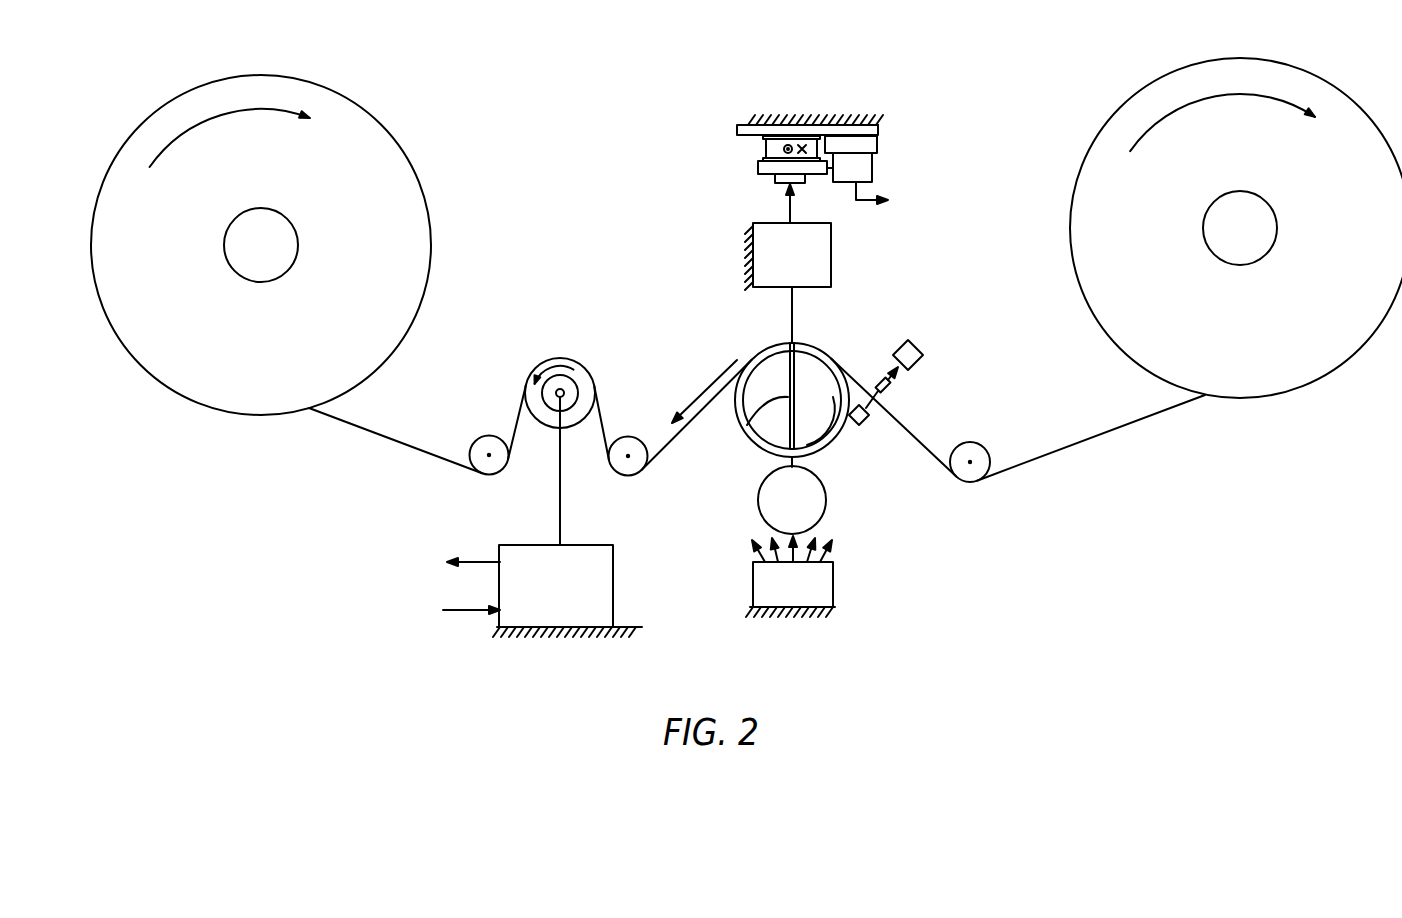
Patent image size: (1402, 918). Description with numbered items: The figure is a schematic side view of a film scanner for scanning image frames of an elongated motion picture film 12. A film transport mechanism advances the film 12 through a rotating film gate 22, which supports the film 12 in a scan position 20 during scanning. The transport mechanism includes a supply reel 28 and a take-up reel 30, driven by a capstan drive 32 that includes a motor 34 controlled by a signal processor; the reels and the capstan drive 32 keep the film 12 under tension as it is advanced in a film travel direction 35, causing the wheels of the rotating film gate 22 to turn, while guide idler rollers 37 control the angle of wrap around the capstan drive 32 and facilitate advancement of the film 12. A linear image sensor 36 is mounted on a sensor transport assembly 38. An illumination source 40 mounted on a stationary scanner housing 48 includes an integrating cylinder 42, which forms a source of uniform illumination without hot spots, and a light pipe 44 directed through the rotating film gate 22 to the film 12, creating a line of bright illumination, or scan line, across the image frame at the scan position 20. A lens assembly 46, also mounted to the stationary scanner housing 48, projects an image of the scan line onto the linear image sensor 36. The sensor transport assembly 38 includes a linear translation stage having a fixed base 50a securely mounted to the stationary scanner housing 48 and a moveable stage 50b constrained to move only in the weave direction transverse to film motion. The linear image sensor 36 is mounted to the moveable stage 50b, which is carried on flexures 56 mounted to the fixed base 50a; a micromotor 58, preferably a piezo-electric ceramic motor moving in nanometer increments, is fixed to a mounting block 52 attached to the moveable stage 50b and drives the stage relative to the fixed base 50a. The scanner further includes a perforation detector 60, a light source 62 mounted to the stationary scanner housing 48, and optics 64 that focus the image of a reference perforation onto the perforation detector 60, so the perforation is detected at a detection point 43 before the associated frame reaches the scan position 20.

The film 12 is at (1085, 443).
The scan position 20 is at (790, 343).
The rotating film gate 22 is at (755, 445).
The supply reel 28 is at (1089, 147).
The take-up reel 30 is at (384, 123).
The capstan drive 32 is at (563, 428).
The motor 34 is at (613, 577).
The film travel direction 35 is at (702, 391).
The linear image sensor 36 is at (808, 188).
The guide idler rollers 37 is at (492, 474).
The sensor transport assembly 38 is at (704, 113).
The illumination source 40 is at (753, 583).
The integrating cylinder 42 is at (826, 505).
The detection point 43 is at (871, 395).
The light pipe 44 is at (747, 425).
The lens assembly 46 is at (831, 253).
The stationary scanner housing 48 is at (590, 633).
The fixed base 50a is at (878, 130).
The moveable stage 50b is at (758, 168).
The mounting block 52 is at (877, 146).
The flexures 56 is at (763, 148).
The micromotor 58 is at (872, 168).
The perforation detector 60 is at (918, 345).
The light source 62 is at (866, 424).
The optics 64 is at (900, 390).